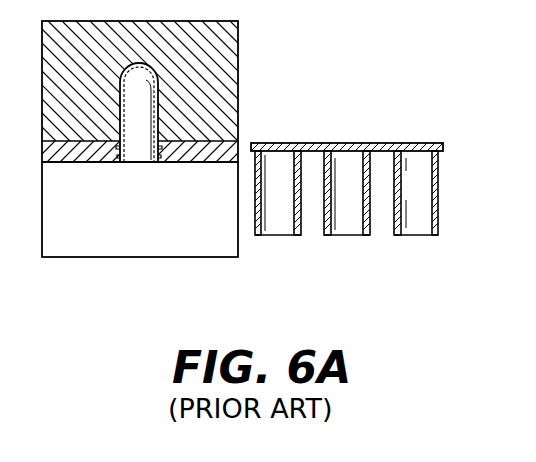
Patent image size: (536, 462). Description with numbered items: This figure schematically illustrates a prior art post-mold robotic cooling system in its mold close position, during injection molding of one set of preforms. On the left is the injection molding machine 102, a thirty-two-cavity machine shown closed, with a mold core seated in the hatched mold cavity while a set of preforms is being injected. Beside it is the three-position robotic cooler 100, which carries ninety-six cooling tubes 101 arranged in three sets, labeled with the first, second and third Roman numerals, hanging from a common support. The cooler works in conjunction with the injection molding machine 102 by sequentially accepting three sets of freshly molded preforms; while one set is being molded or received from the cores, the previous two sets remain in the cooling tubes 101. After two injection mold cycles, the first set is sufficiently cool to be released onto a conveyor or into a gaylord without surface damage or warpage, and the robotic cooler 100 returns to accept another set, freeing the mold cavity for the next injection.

The three-position robotic cooler 100 is at (315, 143).
The cooling tubes 101 is at (422, 235).
The injection molding machine 102 is at (120, 257).